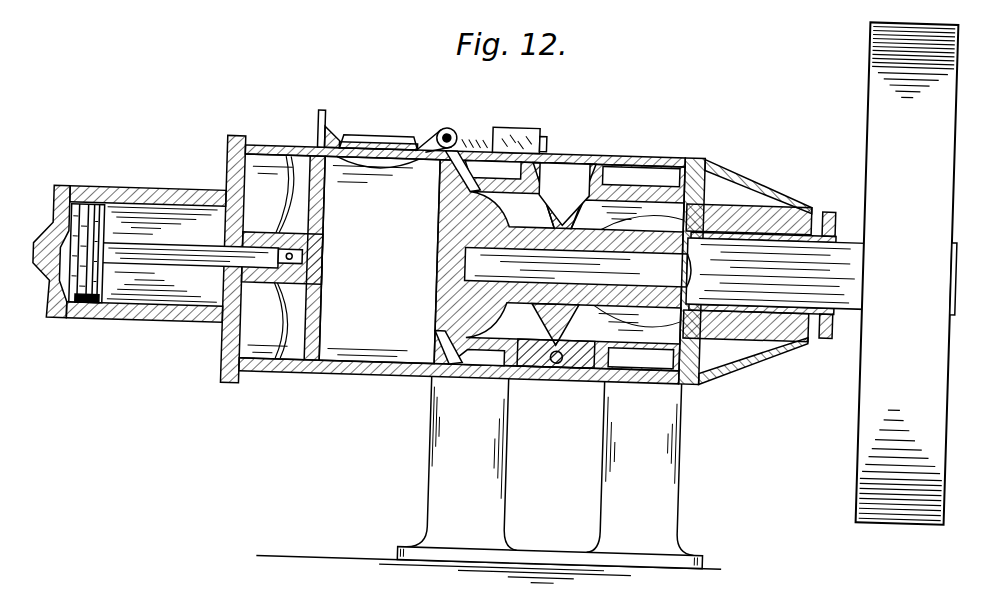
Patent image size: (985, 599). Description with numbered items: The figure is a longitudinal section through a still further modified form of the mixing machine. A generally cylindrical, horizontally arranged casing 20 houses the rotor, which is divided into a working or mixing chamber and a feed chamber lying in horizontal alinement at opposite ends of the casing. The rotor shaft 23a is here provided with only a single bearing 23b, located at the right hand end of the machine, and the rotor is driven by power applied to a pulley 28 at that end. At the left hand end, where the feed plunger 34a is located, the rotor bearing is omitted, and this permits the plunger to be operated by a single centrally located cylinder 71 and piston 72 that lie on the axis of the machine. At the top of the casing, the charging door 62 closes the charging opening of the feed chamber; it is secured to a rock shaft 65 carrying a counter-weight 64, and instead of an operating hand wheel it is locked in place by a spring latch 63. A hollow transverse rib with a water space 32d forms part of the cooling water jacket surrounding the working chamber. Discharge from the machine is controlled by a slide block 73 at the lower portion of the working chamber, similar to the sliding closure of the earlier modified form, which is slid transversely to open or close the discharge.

The casing 20 is at (620, 232).
The rotor shaft 23a is at (628, 308).
The single bearing 23b is at (760, 232).
The pulley 28 is at (877, 426).
The valve seat 32d is at (577, 172).
The feed plunger 34a is at (322, 228).
The charging door 62 is at (371, 143).
The spring latch 63 is at (312, 127).
The counter-weight 64 is at (511, 136).
The rock shaft 65 is at (447, 138).
The cylinder 71 is at (146, 235).
The piston 72 is at (92, 318).
The slide block 73 is at (548, 378).